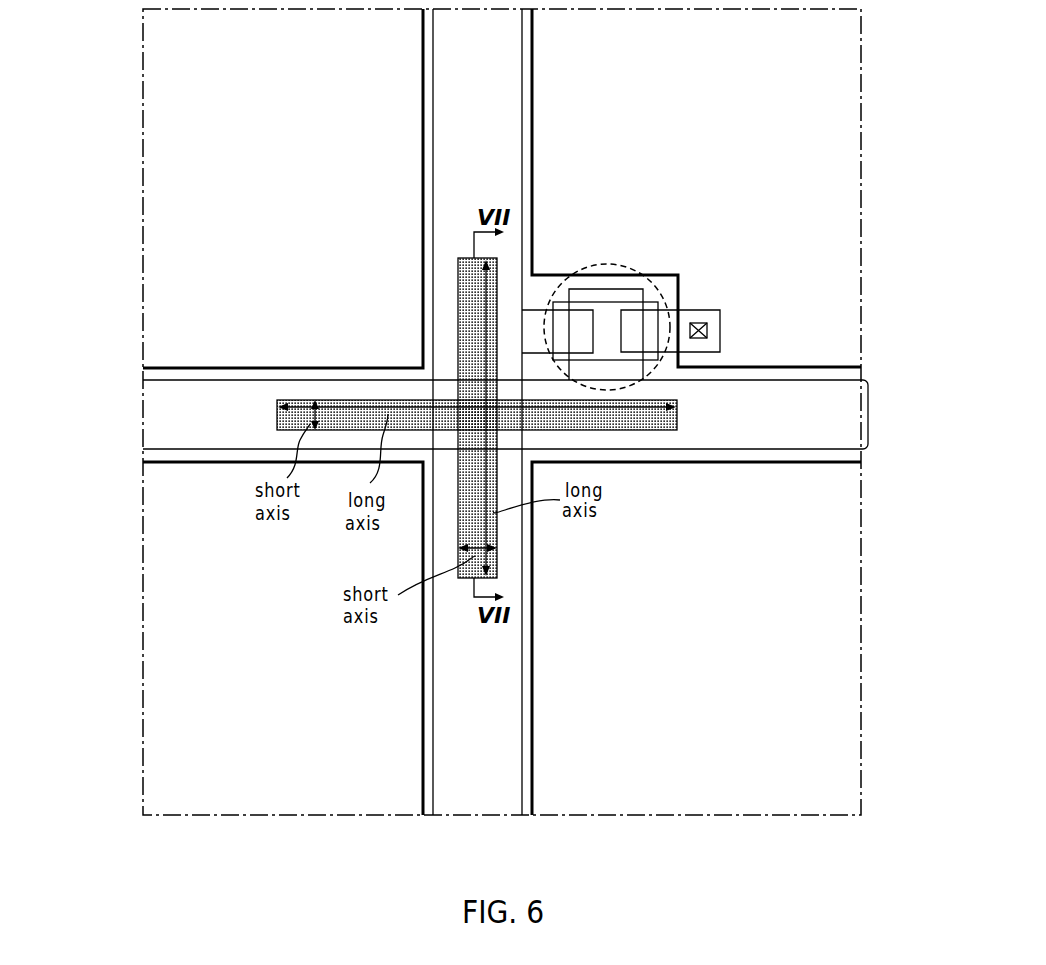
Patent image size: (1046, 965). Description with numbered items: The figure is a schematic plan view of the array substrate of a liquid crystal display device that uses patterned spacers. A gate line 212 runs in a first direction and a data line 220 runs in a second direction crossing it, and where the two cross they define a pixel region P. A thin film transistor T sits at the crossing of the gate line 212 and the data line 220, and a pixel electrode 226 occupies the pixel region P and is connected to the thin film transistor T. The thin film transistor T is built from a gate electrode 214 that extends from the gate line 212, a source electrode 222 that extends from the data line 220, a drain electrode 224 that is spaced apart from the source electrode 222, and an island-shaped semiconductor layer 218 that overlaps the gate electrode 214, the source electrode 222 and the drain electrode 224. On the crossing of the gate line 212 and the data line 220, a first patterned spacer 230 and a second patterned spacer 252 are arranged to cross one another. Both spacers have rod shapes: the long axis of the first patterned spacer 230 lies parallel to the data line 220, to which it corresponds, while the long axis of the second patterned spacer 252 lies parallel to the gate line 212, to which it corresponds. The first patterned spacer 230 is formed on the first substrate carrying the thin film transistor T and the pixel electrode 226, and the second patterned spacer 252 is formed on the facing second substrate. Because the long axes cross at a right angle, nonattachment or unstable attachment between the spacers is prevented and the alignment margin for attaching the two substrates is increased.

The gate line 212 is at (868, 380).
The gate electrode 214 is at (602, 293).
The semiconductor layer 218 is at (628, 300).
The data line 220 is at (523, 815).
The source electrode 222 is at (533, 313).
The drain electrode 224 is at (708, 310).
The pixel electrode 226 is at (163, 222).
The first patterned spacer 230 is at (497, 538).
The second patterned spacer 252 is at (660, 432).
The pixel region P is at (522, 140).
The thin film transistor T is at (660, 278).